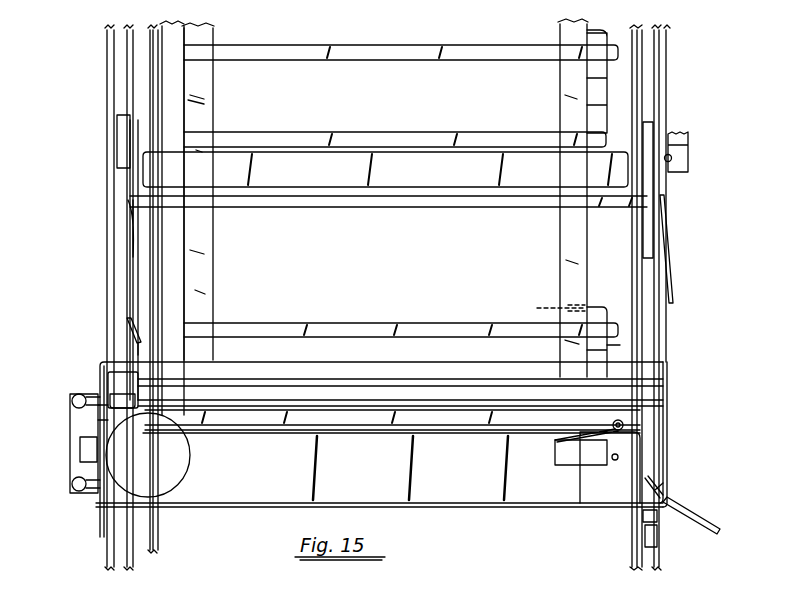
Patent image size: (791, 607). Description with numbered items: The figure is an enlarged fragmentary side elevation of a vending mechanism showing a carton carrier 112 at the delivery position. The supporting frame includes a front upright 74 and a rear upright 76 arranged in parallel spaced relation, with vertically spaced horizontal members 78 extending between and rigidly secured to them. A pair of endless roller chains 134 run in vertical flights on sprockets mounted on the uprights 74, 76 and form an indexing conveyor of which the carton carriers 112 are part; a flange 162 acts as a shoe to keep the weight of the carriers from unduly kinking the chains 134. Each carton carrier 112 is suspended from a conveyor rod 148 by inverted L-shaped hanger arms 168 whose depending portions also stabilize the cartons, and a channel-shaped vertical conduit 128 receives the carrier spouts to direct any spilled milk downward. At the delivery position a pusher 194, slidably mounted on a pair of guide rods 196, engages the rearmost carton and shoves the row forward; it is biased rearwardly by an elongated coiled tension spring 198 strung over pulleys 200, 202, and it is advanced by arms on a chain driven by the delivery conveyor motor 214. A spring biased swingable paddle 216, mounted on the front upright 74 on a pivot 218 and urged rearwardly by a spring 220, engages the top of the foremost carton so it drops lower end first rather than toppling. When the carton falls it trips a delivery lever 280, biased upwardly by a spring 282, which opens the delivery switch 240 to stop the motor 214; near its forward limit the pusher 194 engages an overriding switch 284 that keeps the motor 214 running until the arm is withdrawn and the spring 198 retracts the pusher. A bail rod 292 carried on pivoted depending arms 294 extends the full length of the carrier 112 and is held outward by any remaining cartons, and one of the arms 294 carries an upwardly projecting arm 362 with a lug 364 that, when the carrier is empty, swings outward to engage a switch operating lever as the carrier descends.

The front upright 74 is at (663, 72).
The rear upright 76 is at (108, 118).
The horizontal members 78 is at (340, 47).
The carton carrier 112 is at (311, 185).
The vertical conduit 128 is at (152, 78).
The roller chain 134 is at (118, 260).
The conveyor rod 148 is at (380, 208).
The flange 162 is at (118, 148).
The hanger arm 168 is at (203, 87).
The pusher 194 is at (127, 328).
The guide rods 196 is at (412, 386).
The coiled tension spring 198 is at (70, 440).
The pulley 200 is at (73, 399).
The pulley 202 is at (74, 492).
The delivery conveyor motor 214 is at (180, 455).
The swingable paddle 216 is at (670, 250).
The pivot 218 is at (672, 158).
The spring 220 is at (677, 129).
The delivery switch 240 is at (643, 540).
The delivery lever 280 is at (700, 518).
The spring 282 is at (643, 518).
The overriding switch 284 is at (567, 460).
The bail rod 292 is at (470, 125).
The depending arms 294 is at (600, 118).
The upwardly projecting arm 362 is at (608, 345).
The lug 364 is at (542, 306).